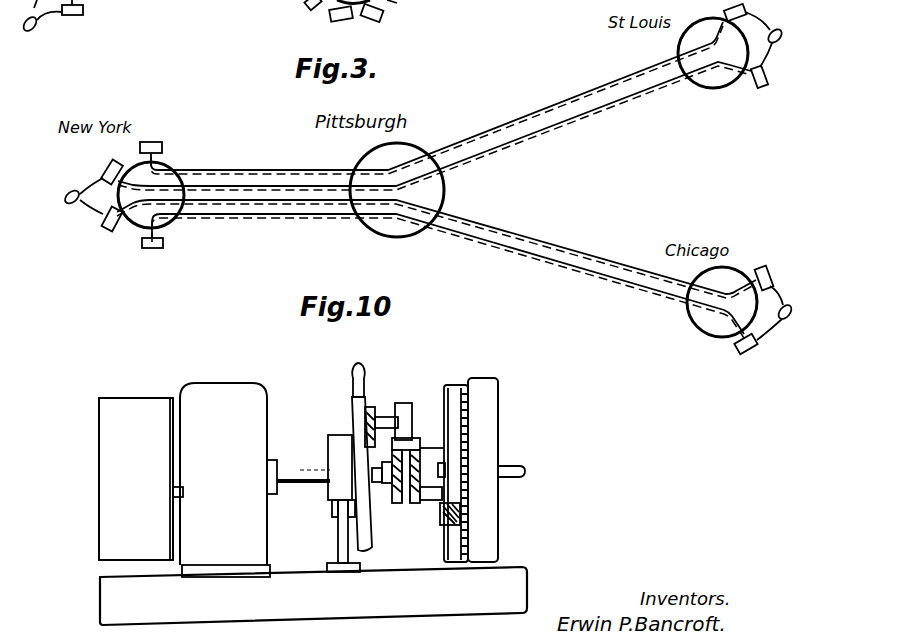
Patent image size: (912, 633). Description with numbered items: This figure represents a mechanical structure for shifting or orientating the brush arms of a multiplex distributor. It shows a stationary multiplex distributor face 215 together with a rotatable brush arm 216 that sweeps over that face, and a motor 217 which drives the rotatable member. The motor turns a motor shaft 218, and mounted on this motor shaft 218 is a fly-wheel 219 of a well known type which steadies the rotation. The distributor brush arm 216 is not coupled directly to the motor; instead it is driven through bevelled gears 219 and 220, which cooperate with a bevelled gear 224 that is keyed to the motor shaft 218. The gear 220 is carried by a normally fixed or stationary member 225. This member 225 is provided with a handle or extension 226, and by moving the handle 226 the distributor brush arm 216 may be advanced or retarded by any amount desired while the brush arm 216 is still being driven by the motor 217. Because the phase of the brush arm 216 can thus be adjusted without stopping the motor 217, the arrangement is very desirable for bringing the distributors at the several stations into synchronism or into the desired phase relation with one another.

The stationary multiplex distributor face 215 is at (467, 380).
The rotatable brush arm 216 is at (446, 388).
The motor 217 is at (228, 480).
The motor shaft 218 is at (289, 456).
The fly-wheel 219 is at (420, 524).
The bevelled gear 220 is at (412, 440).
The bevelled gear 224 is at (392, 503).
The normally fixed or stationary member 225 is at (352, 412).
The handle or extension 226 is at (364, 368).